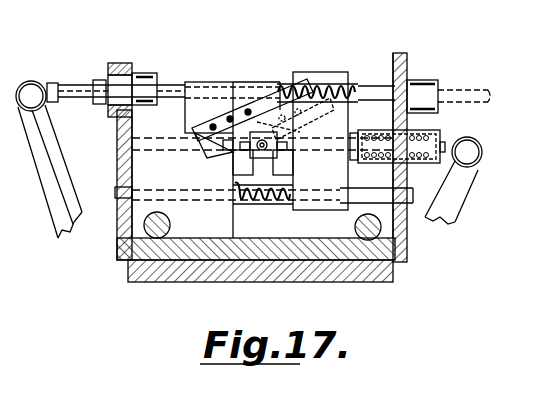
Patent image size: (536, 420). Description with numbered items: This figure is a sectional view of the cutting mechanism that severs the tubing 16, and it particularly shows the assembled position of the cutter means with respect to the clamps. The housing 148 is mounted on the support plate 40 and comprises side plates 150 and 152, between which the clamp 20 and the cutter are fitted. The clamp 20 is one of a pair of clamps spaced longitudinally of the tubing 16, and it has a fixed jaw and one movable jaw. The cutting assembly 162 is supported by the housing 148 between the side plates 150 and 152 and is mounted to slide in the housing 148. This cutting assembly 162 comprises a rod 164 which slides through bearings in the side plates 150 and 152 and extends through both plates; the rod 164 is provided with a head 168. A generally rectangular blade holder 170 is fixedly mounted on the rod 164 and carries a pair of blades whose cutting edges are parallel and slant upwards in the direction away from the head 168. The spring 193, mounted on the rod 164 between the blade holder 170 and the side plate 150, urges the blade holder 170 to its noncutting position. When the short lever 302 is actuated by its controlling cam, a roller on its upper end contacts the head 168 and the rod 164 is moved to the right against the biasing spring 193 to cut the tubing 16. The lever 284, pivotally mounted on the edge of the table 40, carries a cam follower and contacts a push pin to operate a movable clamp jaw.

The tubing 16 is at (264, 160).
The clamp 20 is at (278, 152).
The support plate 40 is at (197, 283).
The housing 148 is at (452, 261).
The side plate 150 is at (408, 64).
The side plate 152 is at (117, 150).
The cutting assembly 162 is at (247, 81).
The rod 164 is at (80, 83).
The head 168 is at (50, 82).
The blade holder 170 is at (247, 82).
The spring 193 is at (375, 68).
The lever 284 is at (470, 190).
The short lever 302 is at (41, 162).